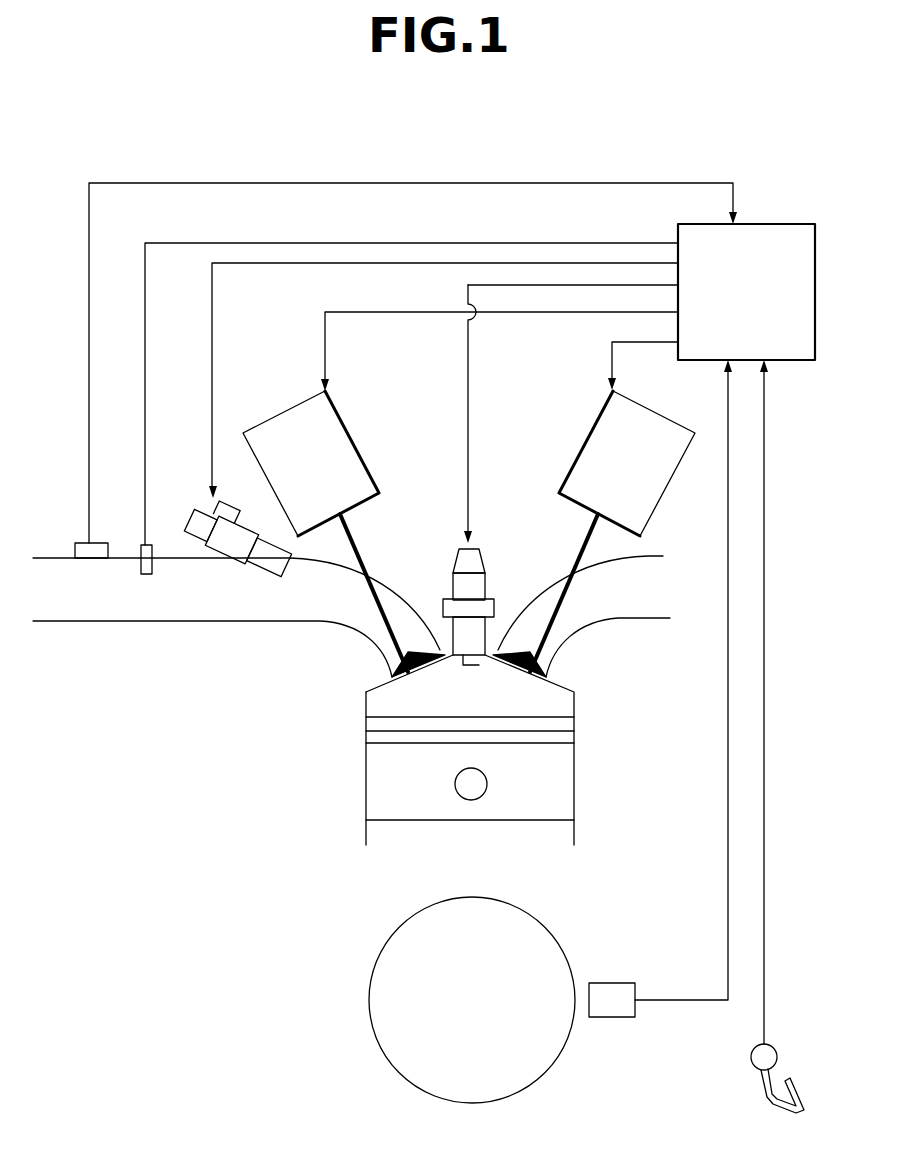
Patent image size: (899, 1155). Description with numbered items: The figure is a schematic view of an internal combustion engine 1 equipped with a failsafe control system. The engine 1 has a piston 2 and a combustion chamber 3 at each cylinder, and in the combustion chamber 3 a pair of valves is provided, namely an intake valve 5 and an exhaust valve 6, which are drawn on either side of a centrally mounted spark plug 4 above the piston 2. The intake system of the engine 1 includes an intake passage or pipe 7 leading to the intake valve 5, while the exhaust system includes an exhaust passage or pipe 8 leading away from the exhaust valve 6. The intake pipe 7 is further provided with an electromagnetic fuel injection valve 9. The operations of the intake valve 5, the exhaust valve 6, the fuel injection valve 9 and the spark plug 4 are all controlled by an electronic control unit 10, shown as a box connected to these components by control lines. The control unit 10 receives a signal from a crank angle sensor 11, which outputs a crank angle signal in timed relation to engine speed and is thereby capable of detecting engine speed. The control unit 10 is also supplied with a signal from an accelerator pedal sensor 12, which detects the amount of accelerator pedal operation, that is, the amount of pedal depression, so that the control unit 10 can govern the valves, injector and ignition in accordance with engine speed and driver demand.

The internal combustion engine 1 is at (326, 748).
The piston 2 is at (548, 769).
The combustion chamber 3 is at (560, 703).
The spark plug 4 is at (483, 556).
The intake valve 5 is at (358, 543).
The exhaust valve 6 is at (580, 545).
The intake passage or pipe 7 is at (238, 621).
The exhaust passage or pipe 8 is at (630, 605).
The electromagnetic fuel injection valve 9 is at (202, 520).
The electronic control unit 10 is at (780, 222).
The crank angle sensor 11 is at (608, 983).
The accelerator pedal sensor 12 is at (752, 1057).